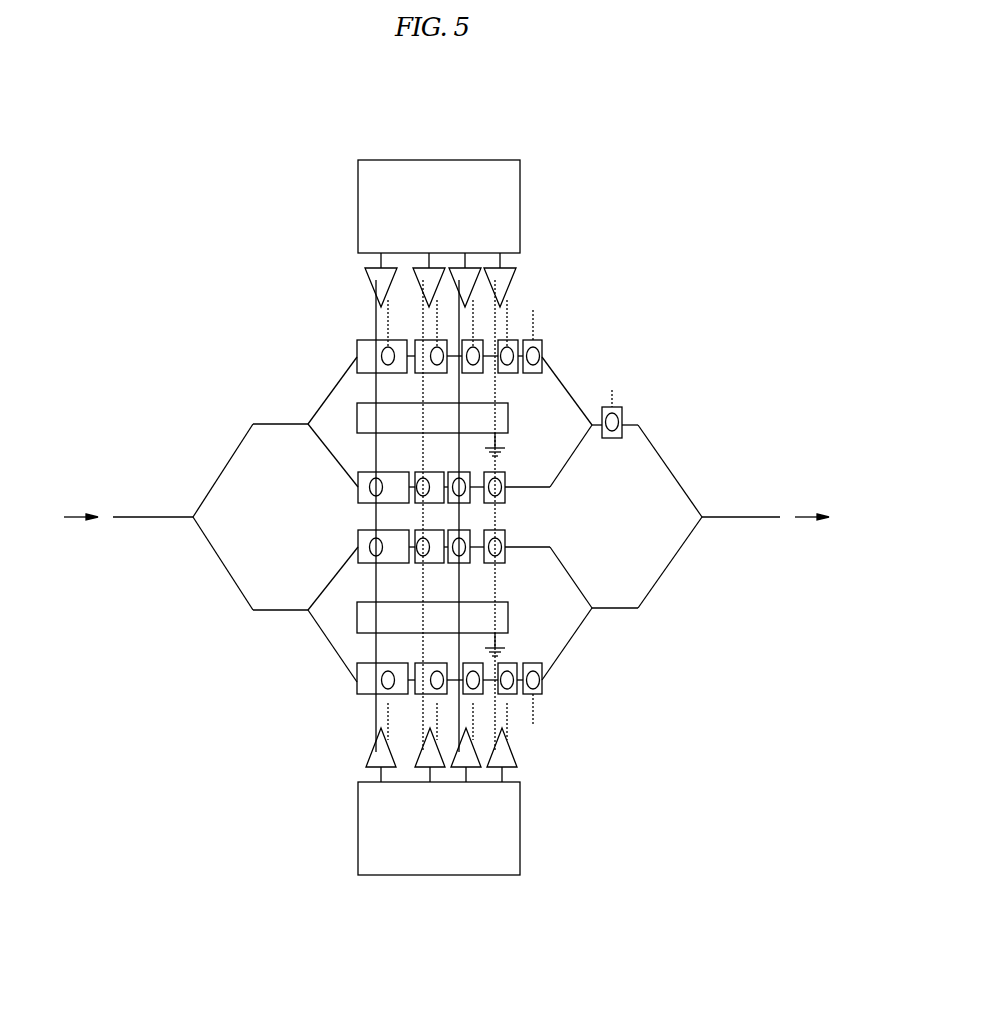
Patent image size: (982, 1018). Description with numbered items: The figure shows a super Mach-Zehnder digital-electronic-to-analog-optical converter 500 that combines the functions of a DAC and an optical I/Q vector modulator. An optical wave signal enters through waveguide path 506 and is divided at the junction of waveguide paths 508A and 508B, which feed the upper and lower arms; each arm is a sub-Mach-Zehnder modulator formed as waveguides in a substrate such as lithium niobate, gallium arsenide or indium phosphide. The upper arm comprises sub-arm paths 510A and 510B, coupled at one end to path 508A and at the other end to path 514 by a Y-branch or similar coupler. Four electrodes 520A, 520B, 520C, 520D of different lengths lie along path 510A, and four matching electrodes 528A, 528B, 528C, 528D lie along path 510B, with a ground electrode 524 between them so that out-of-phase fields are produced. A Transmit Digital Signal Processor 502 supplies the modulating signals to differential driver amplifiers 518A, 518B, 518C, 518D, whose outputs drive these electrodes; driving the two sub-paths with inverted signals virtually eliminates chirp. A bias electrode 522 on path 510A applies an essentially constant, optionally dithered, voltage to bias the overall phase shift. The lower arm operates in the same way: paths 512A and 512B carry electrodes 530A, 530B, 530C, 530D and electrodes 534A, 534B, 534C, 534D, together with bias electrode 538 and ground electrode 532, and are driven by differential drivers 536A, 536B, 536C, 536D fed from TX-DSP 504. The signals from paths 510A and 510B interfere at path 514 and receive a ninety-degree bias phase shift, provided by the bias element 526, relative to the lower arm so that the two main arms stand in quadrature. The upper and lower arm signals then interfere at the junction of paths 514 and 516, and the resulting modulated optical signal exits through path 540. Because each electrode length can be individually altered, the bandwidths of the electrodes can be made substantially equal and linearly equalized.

The super Mach-Zehnder digital-electronic-to-analog-optical converter 500 is at (250, 119).
The Transmit Digital Signal Processor 502 is at (520, 222).
The TX-DSP 504 is at (358, 849).
The waveguide path 506 is at (148, 520).
The waveguide path 508A is at (228, 462).
The waveguide path 508B is at (226, 576).
The sub-arm path 510A is at (350, 362).
The sub-arm path 510B is at (322, 446).
The path 512A is at (354, 550).
The path 512B is at (324, 636).
The path 514 is at (670, 459).
The path 516 is at (668, 579).
The differential driver amplifier 518A is at (367, 275).
The differential driver amplifier 518B is at (417, 272).
The differential driver amplifier 518C is at (453, 282).
The differential driver amplifier 518D is at (517, 276).
The electrode 520A is at (362, 367).
The electrode 520B is at (420, 362).
The electrode 520C is at (474, 373).
The electrode 520D is at (535, 357).
The bias electrode 522 is at (543, 343).
The ground electrode 524 is at (518, 427).
The bias 90 electrode 526 is at (612, 440).
The electrode 528A is at (362, 481).
The electrode 528B is at (368, 500).
The electrode 528C is at (472, 504).
The electrode 528D is at (508, 489).
The electrode 530A is at (362, 559).
The electrode 530B is at (368, 572).
The electrode 530C is at (472, 564).
The electrode 530D is at (508, 545).
The ground electrode 532 is at (532, 606).
The electrode 534A is at (360, 687).
The electrode 534B is at (412, 682).
The electrode 534C is at (460, 688).
The electrode 534D is at (520, 693).
The differential driver 536A is at (367, 757).
The differential driver 536B is at (416, 758).
The differential driver 536C is at (486, 766).
The differential driver 536D is at (517, 753).
The bias electrode 538 is at (543, 675).
The path 540 is at (740, 520).